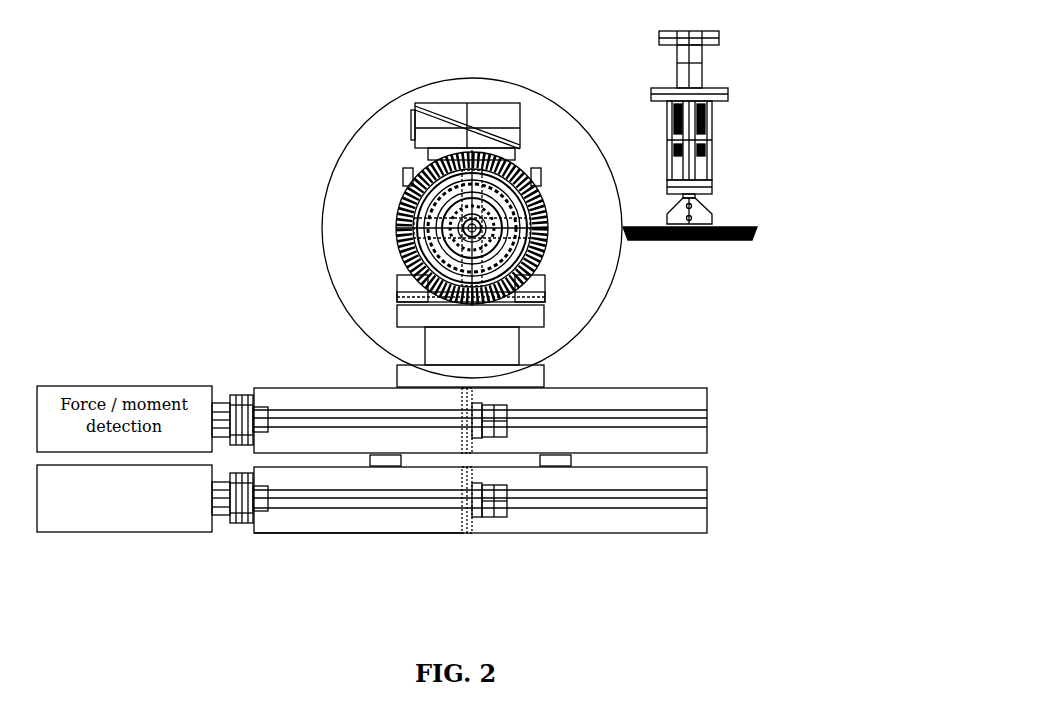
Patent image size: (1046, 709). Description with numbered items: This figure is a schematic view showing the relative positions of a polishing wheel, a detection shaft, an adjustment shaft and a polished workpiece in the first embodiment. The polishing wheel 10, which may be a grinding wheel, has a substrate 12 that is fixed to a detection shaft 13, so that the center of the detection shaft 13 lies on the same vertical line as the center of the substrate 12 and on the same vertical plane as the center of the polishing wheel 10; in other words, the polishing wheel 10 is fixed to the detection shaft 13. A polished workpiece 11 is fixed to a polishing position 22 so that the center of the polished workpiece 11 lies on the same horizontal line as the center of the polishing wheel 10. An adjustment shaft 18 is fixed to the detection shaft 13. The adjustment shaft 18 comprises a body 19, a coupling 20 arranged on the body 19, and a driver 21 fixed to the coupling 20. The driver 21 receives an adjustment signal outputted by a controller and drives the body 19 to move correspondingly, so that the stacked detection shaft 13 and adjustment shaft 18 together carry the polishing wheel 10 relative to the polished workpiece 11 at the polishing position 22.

The polishing wheel 10 is at (353, 210).
The polished workpiece 11 is at (757, 232).
The substrate 12 is at (545, 373).
The detection shaft 13 is at (685, 442).
The adjustment shaft 18 is at (707, 532).
The body 19 is at (310, 535).
The coupling 20 is at (230, 523).
The driver 21 is at (78, 517).
The polishing position 22 is at (710, 143).